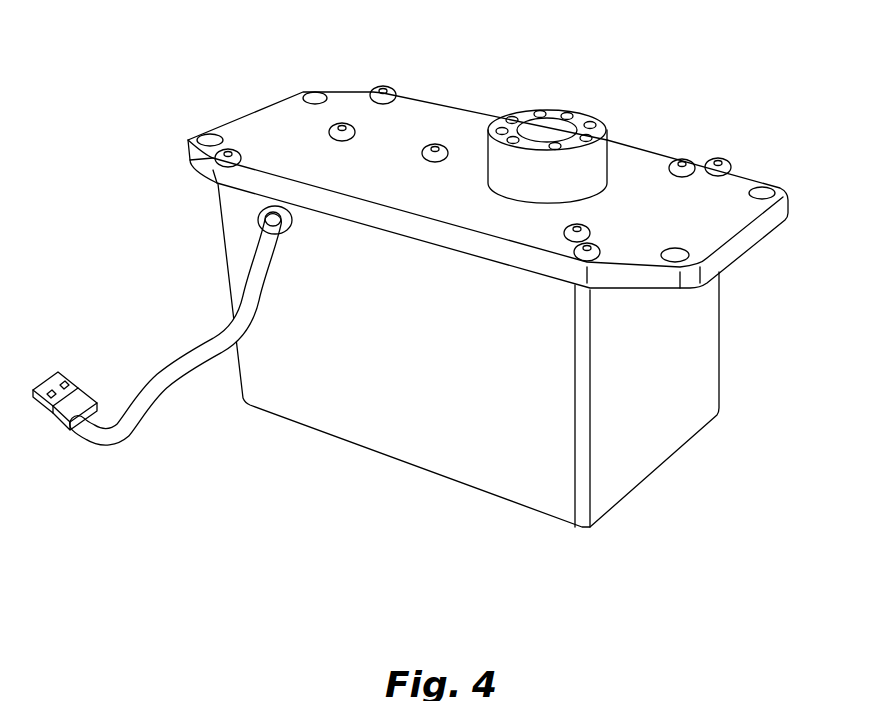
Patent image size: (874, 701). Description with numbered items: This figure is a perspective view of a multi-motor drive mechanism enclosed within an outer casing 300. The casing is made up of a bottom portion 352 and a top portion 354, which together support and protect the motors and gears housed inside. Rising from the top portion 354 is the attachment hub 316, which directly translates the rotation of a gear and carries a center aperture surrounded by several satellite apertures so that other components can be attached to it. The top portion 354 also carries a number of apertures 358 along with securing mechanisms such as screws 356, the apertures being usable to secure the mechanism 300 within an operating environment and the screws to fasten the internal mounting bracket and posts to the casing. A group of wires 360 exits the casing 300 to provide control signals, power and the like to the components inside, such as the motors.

The casing 300 is at (272, 530).
The attachment hub 316 is at (580, 114).
The bottom portion 352 is at (637, 488).
The top portion 354 is at (432, 128).
The fasteners 356 is at (387, 90).
The apertures 358 is at (208, 139).
The group of wires 360 is at (167, 380).